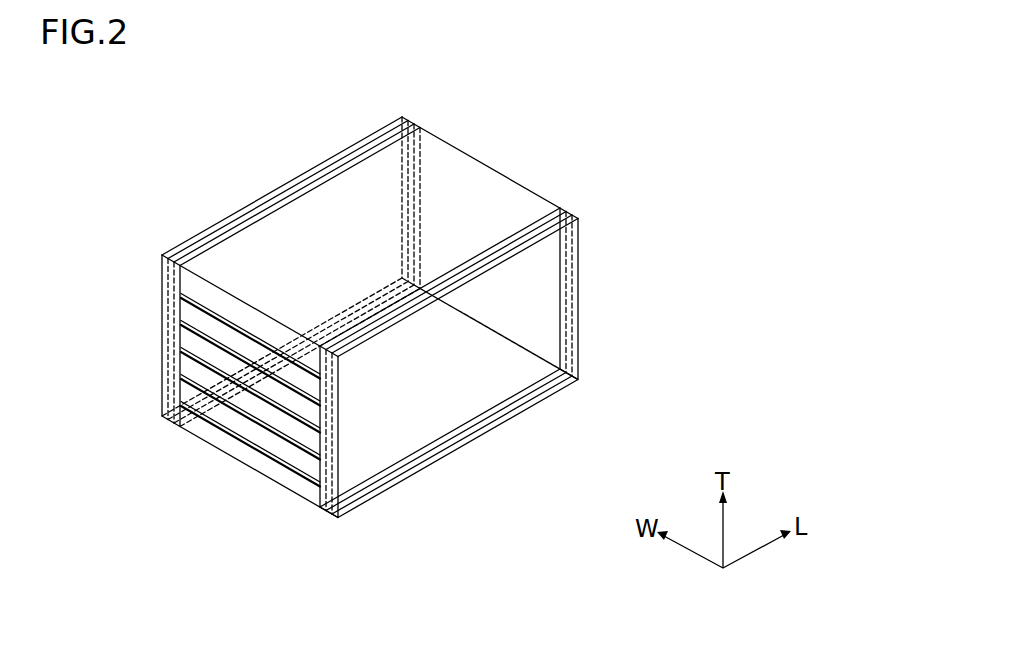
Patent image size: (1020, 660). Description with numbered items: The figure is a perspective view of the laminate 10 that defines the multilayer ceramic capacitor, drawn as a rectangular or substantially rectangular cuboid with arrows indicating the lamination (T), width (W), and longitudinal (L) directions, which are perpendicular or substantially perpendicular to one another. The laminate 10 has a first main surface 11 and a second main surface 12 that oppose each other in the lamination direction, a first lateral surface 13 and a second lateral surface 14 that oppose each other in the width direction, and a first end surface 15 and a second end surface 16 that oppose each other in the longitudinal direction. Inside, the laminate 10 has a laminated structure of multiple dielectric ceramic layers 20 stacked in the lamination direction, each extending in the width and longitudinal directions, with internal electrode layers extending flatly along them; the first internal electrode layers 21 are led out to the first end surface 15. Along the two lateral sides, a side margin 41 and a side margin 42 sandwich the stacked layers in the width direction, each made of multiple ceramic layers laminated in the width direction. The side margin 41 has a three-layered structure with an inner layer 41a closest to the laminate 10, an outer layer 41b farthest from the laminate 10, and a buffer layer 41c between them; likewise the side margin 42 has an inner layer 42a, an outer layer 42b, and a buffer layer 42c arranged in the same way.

The laminate 10 is at (184, 119).
The first main surface 11 is at (430, 203).
The second main surface 12 is at (418, 470).
The first lateral surface 13 is at (318, 207).
The second lateral surface 14 is at (462, 400).
The first end surface 15 is at (240, 423).
The second end surface 16 is at (482, 213).
The dielectric ceramic layer 20 is at (213, 380).
The first internal electrode layer 21 is at (190, 345).
The side margin 41 is at (231, 191).
The inner layer 41a is at (217, 223).
The outer layer 41b is at (247, 208).
The buffer layer 41c is at (232, 212).
The side margin 42 is at (528, 278).
The inner layer 42a is at (525, 236).
The outer layer 42b is at (507, 260).
The buffer layer 42c is at (533, 250).